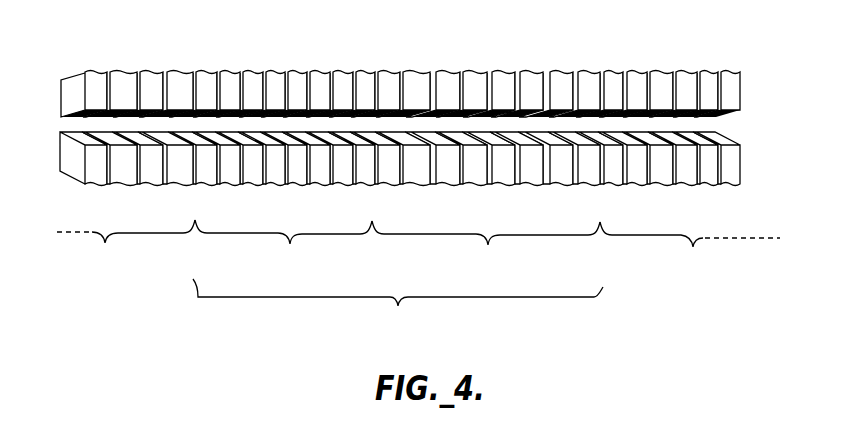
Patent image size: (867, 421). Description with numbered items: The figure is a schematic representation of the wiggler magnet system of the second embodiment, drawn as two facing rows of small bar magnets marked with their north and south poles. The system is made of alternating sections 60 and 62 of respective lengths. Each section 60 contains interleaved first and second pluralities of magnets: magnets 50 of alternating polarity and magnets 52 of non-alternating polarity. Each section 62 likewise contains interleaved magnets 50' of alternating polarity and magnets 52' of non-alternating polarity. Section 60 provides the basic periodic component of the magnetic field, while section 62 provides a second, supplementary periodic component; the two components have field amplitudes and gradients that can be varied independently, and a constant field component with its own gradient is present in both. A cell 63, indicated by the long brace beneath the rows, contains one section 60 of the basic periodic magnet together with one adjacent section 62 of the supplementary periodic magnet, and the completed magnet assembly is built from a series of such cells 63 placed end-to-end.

The magnets of alternating polarity 50 is at (427, 95).
The magnets of alternating polarity 50' is at (508, 95).
The magnets of non-alternating polarity 52 is at (395, 109).
The magnets of non-alternating polarity 52' is at (467, 109).
The section 60 is at (290, 244).
The section 62 is at (105, 243).
The cell 63 is at (398, 306).